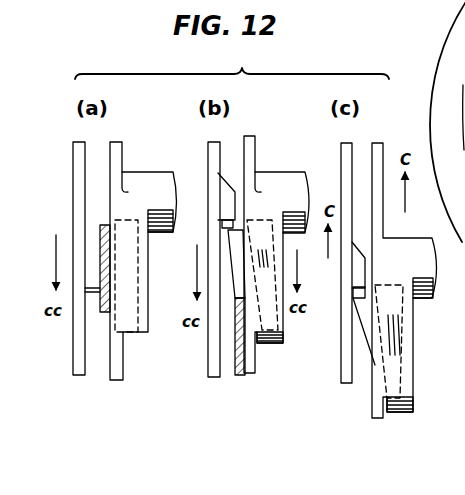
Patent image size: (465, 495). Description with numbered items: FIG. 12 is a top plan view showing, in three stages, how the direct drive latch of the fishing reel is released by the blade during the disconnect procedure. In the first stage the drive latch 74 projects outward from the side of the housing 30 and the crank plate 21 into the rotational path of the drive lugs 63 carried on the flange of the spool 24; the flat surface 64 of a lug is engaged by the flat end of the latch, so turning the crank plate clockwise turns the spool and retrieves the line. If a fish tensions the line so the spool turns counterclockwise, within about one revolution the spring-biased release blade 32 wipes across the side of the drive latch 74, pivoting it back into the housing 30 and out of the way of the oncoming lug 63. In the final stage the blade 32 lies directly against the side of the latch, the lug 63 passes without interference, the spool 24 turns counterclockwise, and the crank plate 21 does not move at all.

The crank plate 21 is at (124, 164).
The spool 24 is at (72, 183).
The housing 30 is at (147, 293).
The release blade 32 is at (100, 311).
The drive lugs 63 is at (100, 265).
The flat surface 64 is at (358, 297).
The drive latch 74 is at (149, 327).